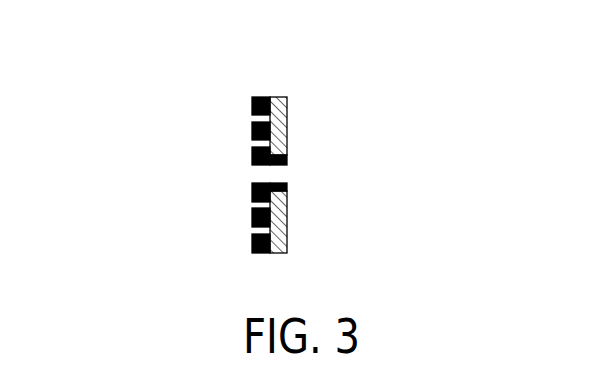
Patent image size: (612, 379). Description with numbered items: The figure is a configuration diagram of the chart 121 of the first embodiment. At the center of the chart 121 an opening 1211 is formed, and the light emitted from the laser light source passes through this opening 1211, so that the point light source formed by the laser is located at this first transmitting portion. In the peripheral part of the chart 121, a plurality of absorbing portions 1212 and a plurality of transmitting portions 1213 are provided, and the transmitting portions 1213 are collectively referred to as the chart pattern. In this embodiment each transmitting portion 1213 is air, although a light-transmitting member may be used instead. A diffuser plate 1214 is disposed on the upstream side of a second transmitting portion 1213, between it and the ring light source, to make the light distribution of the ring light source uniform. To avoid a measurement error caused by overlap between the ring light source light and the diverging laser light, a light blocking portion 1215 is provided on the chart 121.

The chart 121 is at (284, 42).
The opening 1211 is at (287, 175).
The absorbing portion 1212 is at (252, 108).
The transmitting portion 1213 is at (252, 226).
The diffuser plate 1214 is at (287, 117).
The light blocking portion 1215 is at (288, 160).